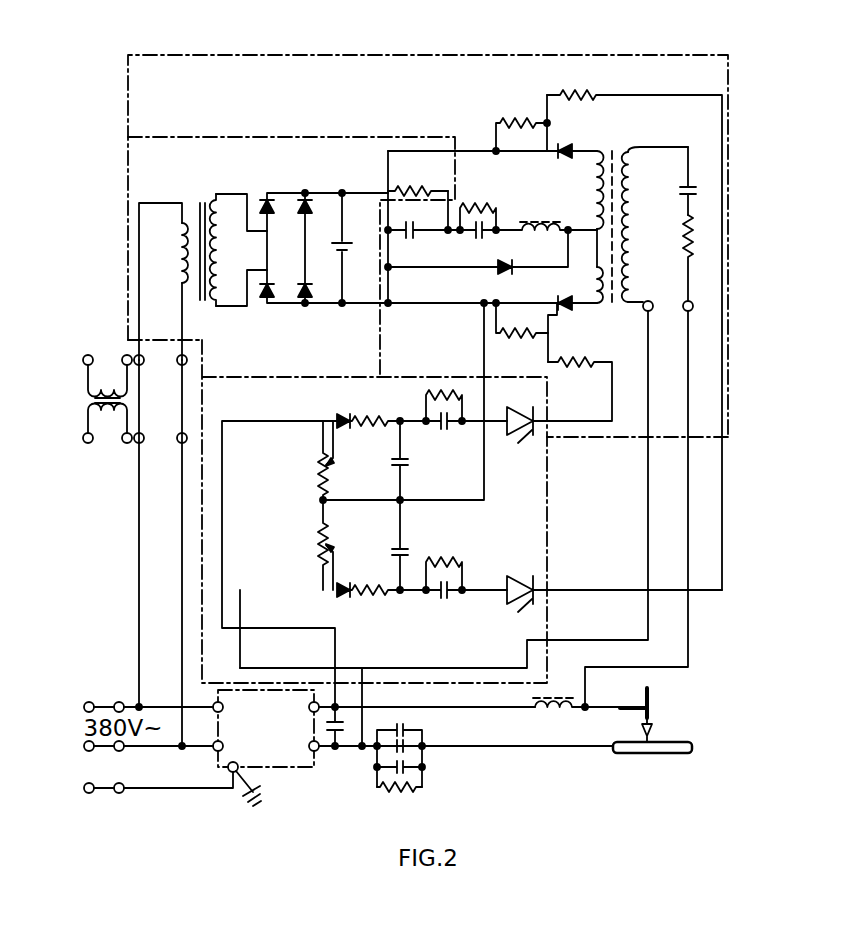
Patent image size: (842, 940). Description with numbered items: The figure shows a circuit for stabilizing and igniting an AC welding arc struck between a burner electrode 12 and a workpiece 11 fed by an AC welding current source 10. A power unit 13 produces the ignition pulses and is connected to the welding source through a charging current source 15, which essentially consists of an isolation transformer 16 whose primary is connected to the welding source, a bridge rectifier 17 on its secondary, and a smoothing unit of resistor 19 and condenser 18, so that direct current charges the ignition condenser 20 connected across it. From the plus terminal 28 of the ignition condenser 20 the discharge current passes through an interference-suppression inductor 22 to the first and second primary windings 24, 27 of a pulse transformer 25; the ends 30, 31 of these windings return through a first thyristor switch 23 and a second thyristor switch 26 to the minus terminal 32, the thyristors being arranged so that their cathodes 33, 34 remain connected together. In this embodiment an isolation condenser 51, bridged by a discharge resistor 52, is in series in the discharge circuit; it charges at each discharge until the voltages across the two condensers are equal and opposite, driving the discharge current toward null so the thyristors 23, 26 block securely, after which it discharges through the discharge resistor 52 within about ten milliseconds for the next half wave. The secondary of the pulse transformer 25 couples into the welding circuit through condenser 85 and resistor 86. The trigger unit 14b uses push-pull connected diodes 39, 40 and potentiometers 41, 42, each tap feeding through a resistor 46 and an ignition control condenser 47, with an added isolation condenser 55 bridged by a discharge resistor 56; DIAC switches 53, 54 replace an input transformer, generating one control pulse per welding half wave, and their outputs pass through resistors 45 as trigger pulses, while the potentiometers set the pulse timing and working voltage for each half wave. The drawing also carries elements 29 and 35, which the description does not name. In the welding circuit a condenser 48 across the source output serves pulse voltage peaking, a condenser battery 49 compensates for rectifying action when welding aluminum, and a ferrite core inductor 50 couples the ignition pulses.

The AC welding current source 10 is at (288, 757).
The workpiece 11 is at (655, 756).
The burner electrode 12 is at (653, 712).
The power unit 13 is at (626, 424).
The trigger unit 14b is at (530, 522).
The charging current source 15 is at (170, 177).
The isolation transformer 16 is at (212, 300).
The bridge rectifier 17 is at (231, 261).
The condenser 18 is at (348, 250).
The resistor 19 is at (413, 192).
The ignition condenser 20 is at (410, 228).
The interference-suppression inductor 22 is at (535, 226).
The first thyristor switch 23 is at (565, 148).
The first primary winding 24 is at (592, 180).
The pulse transformer 25 is at (636, 150).
The second thyristor switch 26 is at (566, 308).
The second primary winding 27 is at (588, 282).
The plus terminal 28 is at (422, 235).
The lower winding section 29 is at (594, 230).
The end of first primary winding 30 is at (600, 152).
The end of second primary winding 31 is at (590, 308).
The minus terminal 32 is at (410, 233).
The cathode 33 is at (522, 153).
The cathode 34 is at (530, 290).
The diode 35 is at (496, 270).
The diode 39 is at (340, 419).
The diode 40 is at (343, 596).
The potentiometer 41 is at (330, 473).
The potentiometer 42 is at (330, 518).
The resistor 45 is at (578, 95).
The resistor 46 is at (365, 417).
The ignition control condenser 47 is at (392, 462).
The condenser 48 is at (335, 735).
The condenser battery 49 is at (424, 779).
The inductor 50 is at (556, 709).
The isolation condenser 51 is at (479, 233).
The discharge resistor 52 is at (478, 203).
The DIAC switch 53 is at (521, 444).
The DIAC switch 54 is at (516, 614).
The isolation condenser 55 is at (445, 426).
The discharge resistor 56 is at (430, 396).
The condenser 85 is at (683, 190).
The resistor 86 is at (683, 250).